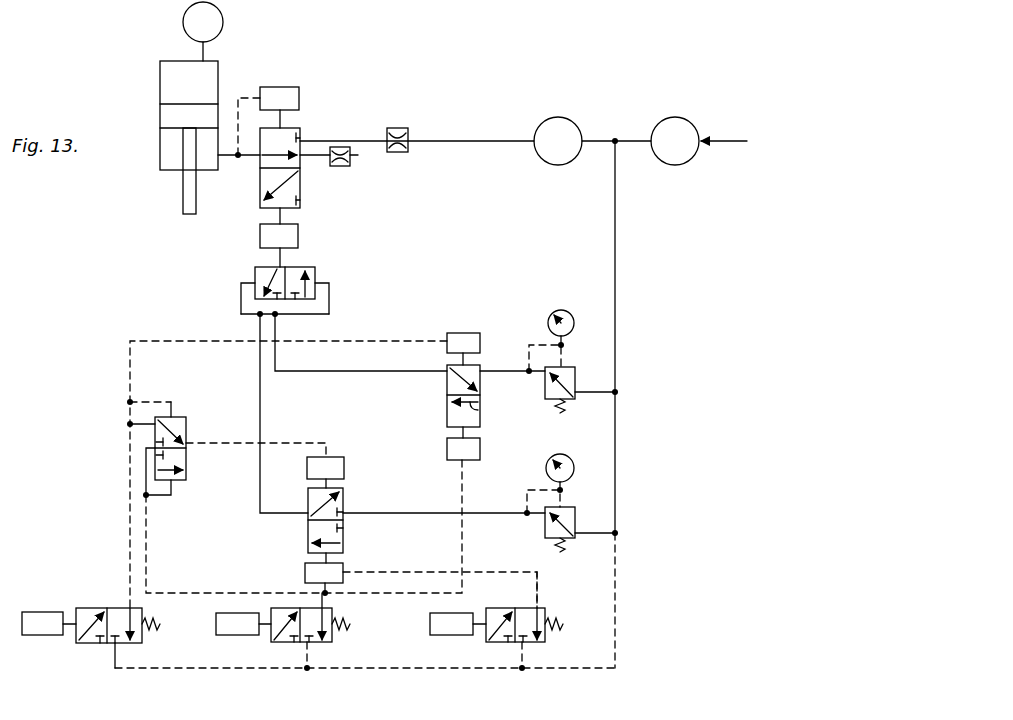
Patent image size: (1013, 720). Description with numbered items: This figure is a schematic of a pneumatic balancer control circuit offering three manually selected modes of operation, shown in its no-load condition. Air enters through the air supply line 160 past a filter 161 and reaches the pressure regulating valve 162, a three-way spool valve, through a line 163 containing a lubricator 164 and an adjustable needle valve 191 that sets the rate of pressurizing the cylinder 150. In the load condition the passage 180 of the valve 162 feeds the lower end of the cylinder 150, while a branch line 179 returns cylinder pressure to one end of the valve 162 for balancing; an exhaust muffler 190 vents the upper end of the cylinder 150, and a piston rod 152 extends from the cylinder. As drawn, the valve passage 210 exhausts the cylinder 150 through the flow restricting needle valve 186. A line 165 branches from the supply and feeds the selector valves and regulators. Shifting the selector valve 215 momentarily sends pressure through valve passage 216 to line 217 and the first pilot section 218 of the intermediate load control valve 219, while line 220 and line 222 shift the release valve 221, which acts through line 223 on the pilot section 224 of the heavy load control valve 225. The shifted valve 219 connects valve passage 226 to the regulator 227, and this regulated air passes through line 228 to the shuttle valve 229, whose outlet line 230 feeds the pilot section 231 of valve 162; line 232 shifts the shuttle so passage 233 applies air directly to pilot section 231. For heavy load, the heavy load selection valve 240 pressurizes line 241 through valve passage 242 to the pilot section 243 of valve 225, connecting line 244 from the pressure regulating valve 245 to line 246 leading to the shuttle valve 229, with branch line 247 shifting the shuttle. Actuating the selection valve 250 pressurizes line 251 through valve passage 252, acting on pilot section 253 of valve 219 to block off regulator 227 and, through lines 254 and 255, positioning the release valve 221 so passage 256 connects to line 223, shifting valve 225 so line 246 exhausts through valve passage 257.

The exhaust muffler 190 is at (183, 22).
The cylinder 150 is at (160, 80).
The piston rod 152 is at (183, 193).
The valve passage 210 is at (265, 160).
The branch line 179 is at (240, 96).
The pressure regulating valve 162 is at (300, 130).
The passage 180 is at (300, 185).
The adjustable needle valve 186 is at (350, 166).
The line 163 is at (478, 141).
The adjustable needle valve 191 is at (400, 128).
The lubricator 164 is at (562, 120).
The filter 161 is at (672, 119).
The air supply line 160 is at (747, 141).
The line 165 is at (615, 304).
The pilot section 231 is at (298, 238).
The outlet line 230 is at (278, 258).
The passage 233 is at (307, 284).
The shuttle valve 229 is at (329, 292).
The branch line 247 is at (241, 307).
The line 232 is at (329, 312).
The line 228 is at (295, 370).
The line 251 is at (130, 522).
The pilot section 253 is at (472, 332).
The intermediate load control valve 219 is at (447, 412).
The valve passage 226 is at (480, 410).
The first pilot section 218 is at (447, 448).
The regulator 227 is at (568, 372).
The line 254 is at (150, 402).
The line 255 is at (148, 424).
The passage 256 is at (176, 420).
The release valve 221 is at (186, 462).
The line 222 is at (160, 495).
The line 220 is at (165, 593).
The line 223 is at (290, 441).
The pilot section 224 is at (334, 457).
The heavy load control valve 225 is at (345, 505).
The valve passage 257 is at (310, 506).
The line 246 is at (292, 518).
The line 244 is at (387, 514).
The pressure regulating valve 245 is at (574, 512).
The pilot section 243 is at (344, 565).
The line 217 is at (462, 547).
The valve passage 216 is at (286, 602).
The selection valve 250 is at (90, 608).
The valve passage 252 is at (92, 641).
The selector valve 215 is at (330, 643).
The heavy load selection valve 240 is at (545, 614).
The line 241 is at (540, 596).
The valve passage 242 is at (492, 644).